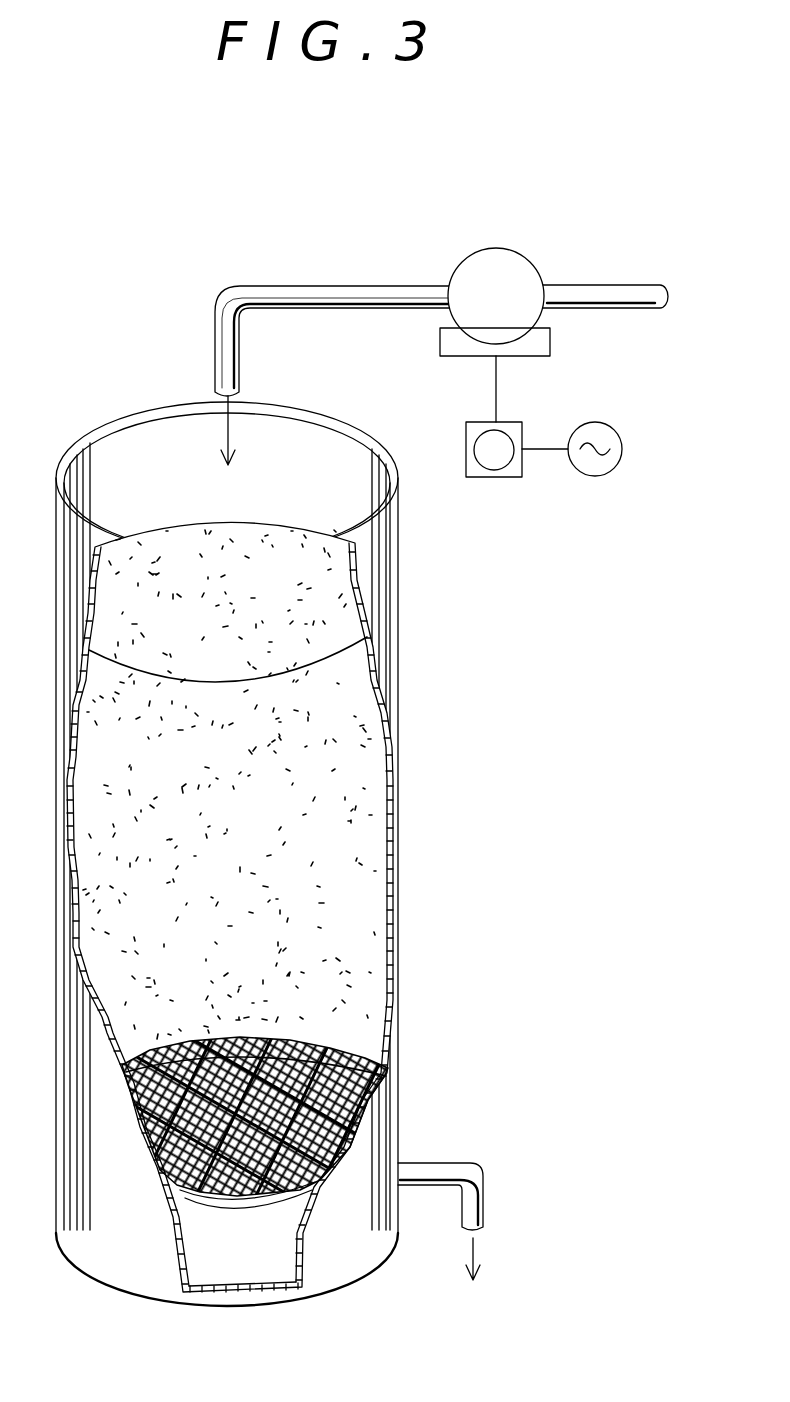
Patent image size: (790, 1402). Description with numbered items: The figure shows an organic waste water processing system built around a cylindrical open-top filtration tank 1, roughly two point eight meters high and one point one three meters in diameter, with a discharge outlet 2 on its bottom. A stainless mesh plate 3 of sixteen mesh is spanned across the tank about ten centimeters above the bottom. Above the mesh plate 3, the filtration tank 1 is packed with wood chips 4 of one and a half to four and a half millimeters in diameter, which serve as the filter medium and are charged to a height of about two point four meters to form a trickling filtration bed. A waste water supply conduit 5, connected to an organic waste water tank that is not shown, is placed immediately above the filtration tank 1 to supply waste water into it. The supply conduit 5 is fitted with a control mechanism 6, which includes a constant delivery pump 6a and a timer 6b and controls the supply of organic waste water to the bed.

The filtration tank 1 is at (380, 598).
The discharge outlet 2 is at (445, 1170).
The stainless mesh plate 3 is at (340, 1060).
The wood chips 4 is at (300, 805).
The waste water supply conduit 5 is at (221, 312).
The control mechanism 6 is at (552, 382).
The constant delivery pump 6a is at (465, 268).
The timer 6b is at (497, 477).